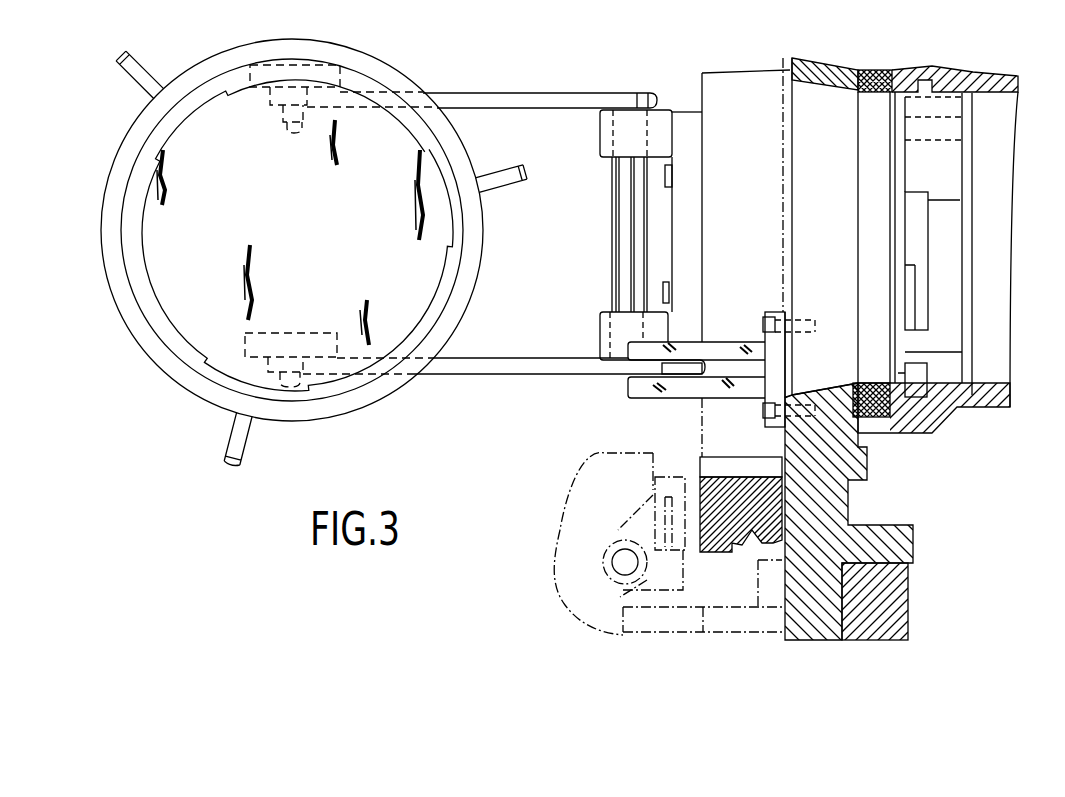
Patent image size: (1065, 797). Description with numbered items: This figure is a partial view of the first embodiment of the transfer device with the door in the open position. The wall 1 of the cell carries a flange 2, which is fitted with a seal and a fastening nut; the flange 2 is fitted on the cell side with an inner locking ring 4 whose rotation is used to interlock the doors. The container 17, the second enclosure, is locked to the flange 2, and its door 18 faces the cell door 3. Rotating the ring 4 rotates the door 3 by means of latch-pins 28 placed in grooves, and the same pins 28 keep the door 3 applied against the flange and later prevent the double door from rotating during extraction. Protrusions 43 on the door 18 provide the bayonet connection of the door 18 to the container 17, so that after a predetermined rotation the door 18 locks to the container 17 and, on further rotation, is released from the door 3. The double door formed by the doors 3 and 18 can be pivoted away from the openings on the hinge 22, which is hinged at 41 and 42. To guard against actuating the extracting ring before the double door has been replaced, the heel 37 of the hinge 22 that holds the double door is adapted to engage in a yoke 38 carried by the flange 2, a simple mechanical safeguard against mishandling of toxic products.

The wall 1 is at (910, 600).
The flange 2 is at (835, 512).
The door 3 is at (178, 343).
The inner locking ring 4 is at (700, 470).
The container 17 is at (937, 412).
The door 18 is at (322, 247).
The hinge 22 is at (481, 358).
The latch-pin 28 is at (120, 72).
The heel 37 is at (673, 370).
The yoke 38 is at (675, 348).
The hinge pivot 41 is at (283, 117).
The hinge pivot 42 is at (614, 174).
The protrusion 43 is at (165, 122).